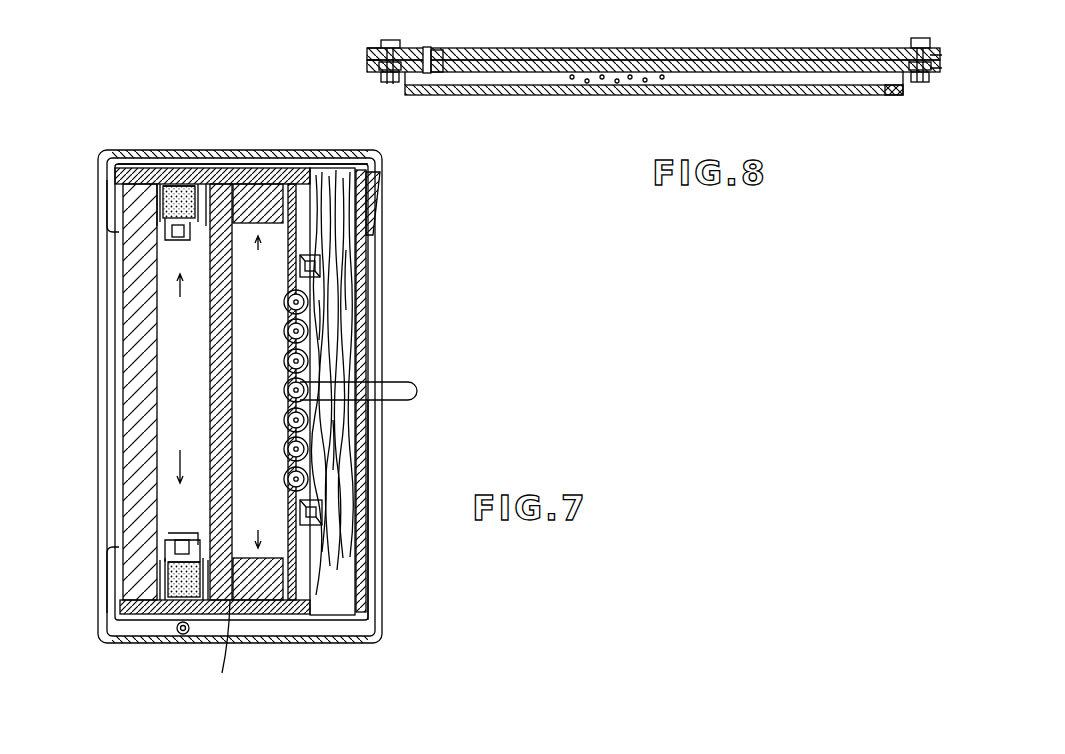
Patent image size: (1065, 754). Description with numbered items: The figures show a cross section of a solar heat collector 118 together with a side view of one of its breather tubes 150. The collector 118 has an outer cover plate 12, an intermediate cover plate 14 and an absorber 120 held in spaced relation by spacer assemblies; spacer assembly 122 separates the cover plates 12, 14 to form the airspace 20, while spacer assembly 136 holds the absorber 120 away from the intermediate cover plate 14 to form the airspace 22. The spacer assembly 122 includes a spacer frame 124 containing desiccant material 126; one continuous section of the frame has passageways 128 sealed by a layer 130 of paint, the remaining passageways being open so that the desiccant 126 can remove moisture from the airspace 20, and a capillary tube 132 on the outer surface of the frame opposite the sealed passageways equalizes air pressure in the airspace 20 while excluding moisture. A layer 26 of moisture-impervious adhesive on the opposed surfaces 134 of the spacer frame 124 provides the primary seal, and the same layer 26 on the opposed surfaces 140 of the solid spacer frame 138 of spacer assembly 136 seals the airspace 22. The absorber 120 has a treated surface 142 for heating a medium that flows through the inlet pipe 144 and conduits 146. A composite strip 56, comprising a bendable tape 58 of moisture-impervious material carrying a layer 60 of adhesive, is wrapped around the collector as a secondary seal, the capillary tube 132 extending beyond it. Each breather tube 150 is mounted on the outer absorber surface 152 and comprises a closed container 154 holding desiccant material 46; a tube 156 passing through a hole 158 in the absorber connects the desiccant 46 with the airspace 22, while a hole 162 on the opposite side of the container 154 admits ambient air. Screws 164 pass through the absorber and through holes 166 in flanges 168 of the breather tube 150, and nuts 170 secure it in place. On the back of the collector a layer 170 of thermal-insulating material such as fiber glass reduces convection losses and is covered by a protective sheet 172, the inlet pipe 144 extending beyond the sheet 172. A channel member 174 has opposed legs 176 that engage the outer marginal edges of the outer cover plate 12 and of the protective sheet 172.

In FIG. 7, the outer cover plate 12 is at (135, 352).
In FIG. 7, the intermediate cover plate 14 is at (224, 393).
In FIG. 7, the airspace 20 is at (166, 407).
In FIG. 7, the airspace 22 is at (240, 345).
In FIG. 7, the layer of moisture-impervious adhesive 26 is at (207, 187).
In FIG. 8, the desiccant material 46 is at (608, 84).
In FIG. 7, the composite strip 56 is at (125, 166).
In FIG. 7, the bendable-formable tape 58 is at (293, 170).
In FIG. 7, the layer of moisture-impervious adhesive 60 is at (214, 648).
In FIG. 7, the solar heat collector 118 is at (445, 256).
In FIG. 7, the absorber 120 is at (322, 337).
In FIG. 8, the absorber 120 is at (833, 35).
In FIG. 7, the spacer assembly 122 is at (180, 378).
In FIG. 7, the spacer frame 124 is at (160, 212).
In FIG. 7, the desiccant material 126 is at (178, 190).
In FIG. 7, the passageways 128 is at (163, 227).
In FIG. 7, the layer of paint 130 is at (167, 533).
In FIG. 7, the capillary tube 132 is at (185, 635).
In FIG. 7, the opposed surfaces 134 is at (158, 183).
In FIG. 7, the spacer assembly 136 is at (258, 392).
In FIG. 7, the solid spacer frame 138 is at (233, 187).
In FIG. 7, the opposed surfaces 140 is at (237, 600).
In FIG. 7, the surface 142 is at (290, 432).
In FIG. 7, the inlet pipe 144 is at (418, 390).
In FIG. 7, the conduits 146 is at (288, 366).
In FIG. 7, the breather tube 150 is at (335, 250).
In FIG. 8, the breather tube 150 is at (864, 124).
In FIG. 7, the outer absorber surface 152 is at (307, 448).
In FIG. 8, the closed container 154 is at (527, 95).
In FIG. 7, the tube 156 is at (300, 266).
In FIG. 8, the tube 156 is at (427, 48).
In FIG. 8, the hole 158 is at (435, 50).
In FIG. 7, the hole 162 is at (325, 512).
In FIG. 8, the hole 162 is at (873, 90).
In FIG. 8, the screws 164 is at (387, 42).
In FIG. 8, the hole 166 is at (407, 67).
In FIG. 8, the flanges 168 is at (378, 70).
In FIG. 7, the nuts 170 is at (333, 310).
In FIG. 8, the nuts 170 is at (378, 80).
In FIG. 7, the protective sheet 172 is at (370, 416).
In FIG. 7, the channel member 174 is at (162, 160).
In FIG. 7, the opposed legs 176 is at (115, 180).